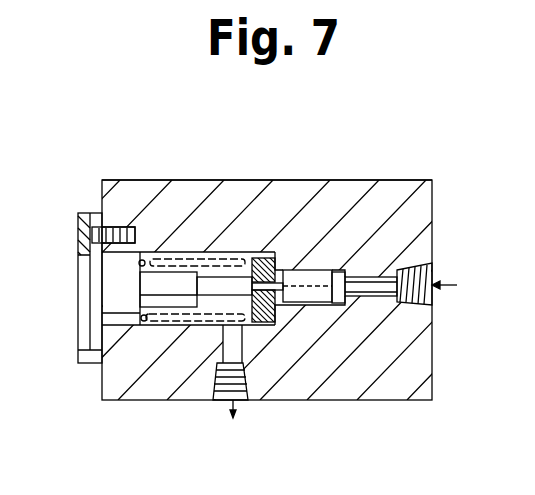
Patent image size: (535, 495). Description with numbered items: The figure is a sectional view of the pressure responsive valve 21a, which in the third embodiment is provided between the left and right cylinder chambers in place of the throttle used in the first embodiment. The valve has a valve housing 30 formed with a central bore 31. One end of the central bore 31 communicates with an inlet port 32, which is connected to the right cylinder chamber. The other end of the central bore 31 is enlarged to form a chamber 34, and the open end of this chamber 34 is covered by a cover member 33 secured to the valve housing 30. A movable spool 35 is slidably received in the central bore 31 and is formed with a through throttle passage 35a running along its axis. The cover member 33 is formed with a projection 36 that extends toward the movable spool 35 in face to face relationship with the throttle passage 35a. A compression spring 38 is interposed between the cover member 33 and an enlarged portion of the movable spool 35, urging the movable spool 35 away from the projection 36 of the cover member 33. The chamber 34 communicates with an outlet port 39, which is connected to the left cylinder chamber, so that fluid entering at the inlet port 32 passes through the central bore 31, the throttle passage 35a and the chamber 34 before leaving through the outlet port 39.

The valve housing 30 is at (377, 190).
The pressure responsive valve 21a is at (146, 174).
The cover member 33 is at (79, 317).
The chamber 34 is at (198, 252).
The compression spring 38 is at (233, 250).
The projection 36 is at (213, 288).
The throttle passage 35a is at (282, 268).
The central bore 31 is at (308, 303).
The movable spool 35 is at (320, 299).
The inlet port 32 is at (433, 290).
The outlet port 39 is at (218, 400).